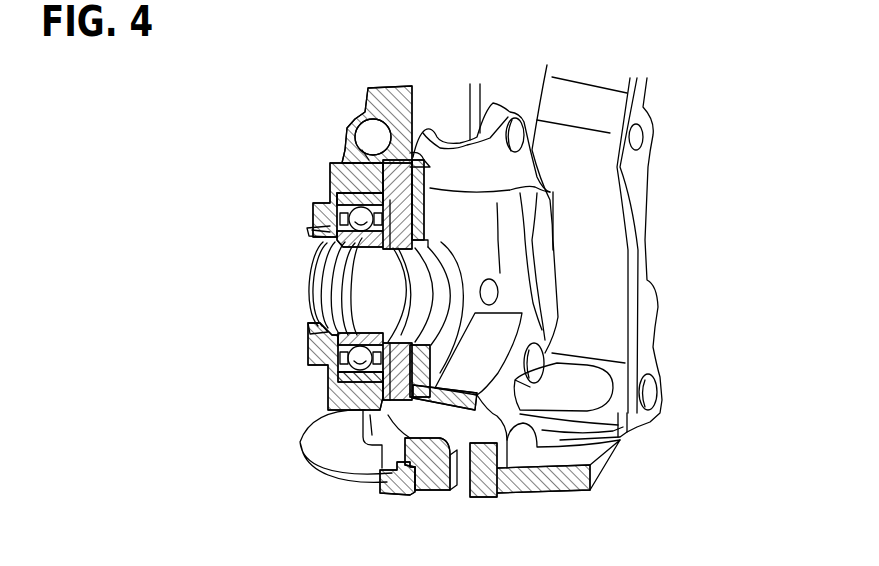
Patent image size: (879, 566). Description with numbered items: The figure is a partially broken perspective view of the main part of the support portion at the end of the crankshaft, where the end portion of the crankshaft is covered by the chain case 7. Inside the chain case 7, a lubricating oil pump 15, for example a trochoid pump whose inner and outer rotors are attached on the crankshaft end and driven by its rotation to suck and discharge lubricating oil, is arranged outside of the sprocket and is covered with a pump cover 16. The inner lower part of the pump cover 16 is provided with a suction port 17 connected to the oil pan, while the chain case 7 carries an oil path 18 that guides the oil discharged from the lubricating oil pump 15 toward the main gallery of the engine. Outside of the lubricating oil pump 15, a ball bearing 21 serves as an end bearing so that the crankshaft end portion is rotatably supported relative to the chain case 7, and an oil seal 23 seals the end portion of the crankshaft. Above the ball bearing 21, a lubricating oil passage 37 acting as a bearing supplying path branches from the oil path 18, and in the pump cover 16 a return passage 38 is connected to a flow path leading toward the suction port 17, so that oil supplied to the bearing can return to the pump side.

The chain case 7 is at (368, 93).
The oil path 18 is at (363, 138).
The lubricating oil passage 37 is at (380, 187).
The ball bearing 21 is at (325, 192).
The oil seal 23 is at (307, 231).
The lubricating oil pump 15 is at (442, 229).
The return passage 38 is at (378, 392).
The suction port 17 is at (455, 467).
The pump cover 16 is at (510, 433).